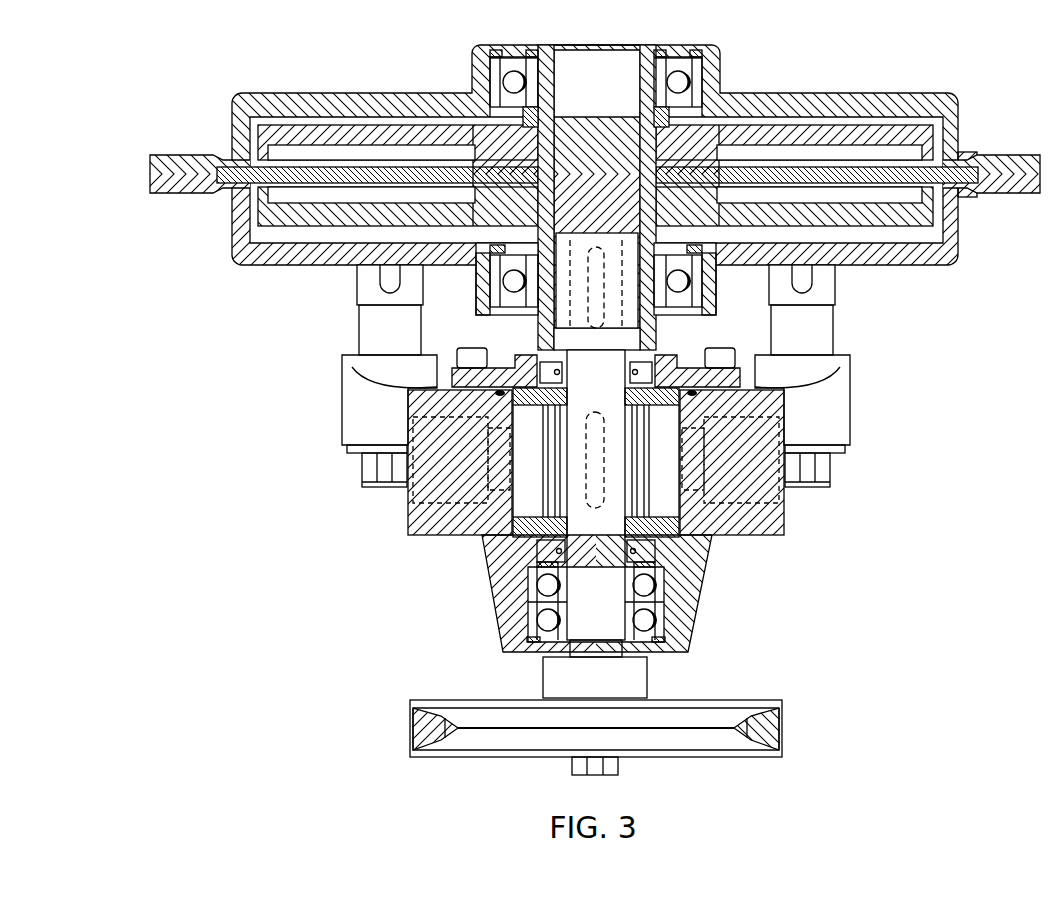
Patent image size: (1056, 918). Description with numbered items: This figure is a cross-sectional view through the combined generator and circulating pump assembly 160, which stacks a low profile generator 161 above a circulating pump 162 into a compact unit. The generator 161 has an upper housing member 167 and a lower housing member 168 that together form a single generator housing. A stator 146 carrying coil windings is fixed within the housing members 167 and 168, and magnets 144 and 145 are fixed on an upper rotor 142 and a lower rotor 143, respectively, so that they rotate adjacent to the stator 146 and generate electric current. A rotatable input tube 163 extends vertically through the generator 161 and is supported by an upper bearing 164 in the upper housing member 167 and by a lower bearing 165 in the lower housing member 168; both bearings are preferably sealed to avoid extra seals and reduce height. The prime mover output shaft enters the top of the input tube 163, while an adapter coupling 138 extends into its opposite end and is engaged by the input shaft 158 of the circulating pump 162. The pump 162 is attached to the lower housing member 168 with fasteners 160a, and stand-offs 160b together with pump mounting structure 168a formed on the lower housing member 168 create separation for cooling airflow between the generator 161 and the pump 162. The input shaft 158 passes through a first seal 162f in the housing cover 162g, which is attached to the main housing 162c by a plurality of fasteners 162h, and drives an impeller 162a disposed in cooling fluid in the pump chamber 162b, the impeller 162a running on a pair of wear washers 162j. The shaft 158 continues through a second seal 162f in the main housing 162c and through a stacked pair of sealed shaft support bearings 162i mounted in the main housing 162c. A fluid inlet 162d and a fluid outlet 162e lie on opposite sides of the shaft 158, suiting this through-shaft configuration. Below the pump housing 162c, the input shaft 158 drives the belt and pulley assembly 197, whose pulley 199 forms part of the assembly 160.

The combined generator and circulating pump assembly 160 is at (564, 401).
The generator 161 is at (564, 180).
The circulating pump 162 is at (593, 501).
The adapter coupling 138 is at (633, 232).
The upper rotor 142 is at (378, 135).
The lower rotor 143 is at (278, 213).
The magnets 144 is at (333, 152).
The magnets 145 is at (280, 195).
The stator 146 is at (292, 173).
The input shaft 158 is at (578, 388).
The fasteners 160a is at (362, 468).
The stand-offs 160b is at (358, 328).
The impeller 162a is at (668, 452).
The pump chamber 162b is at (660, 512).
The main housing 162c is at (490, 602).
The fluid inlet 162d is at (416, 498).
The fluid outlet 162e is at (768, 503).
The seal 162f is at (557, 368).
The housing cover 162g is at (686, 366).
The fasteners 162h is at (727, 356).
The shaft support bearings 162i is at (657, 589).
The wear washers 162j is at (690, 392).
The input tube 163 is at (548, 78).
The upper bearing 164 is at (667, 80).
The lower bearing 165 is at (511, 281).
The upper housing member 167 is at (960, 108).
The lower housing member 168 is at (960, 230).
The pump mounting structure 168a is at (356, 284).
The belt and pulley assembly 197 is at (388, 705).
The pulley 199 is at (437, 758).